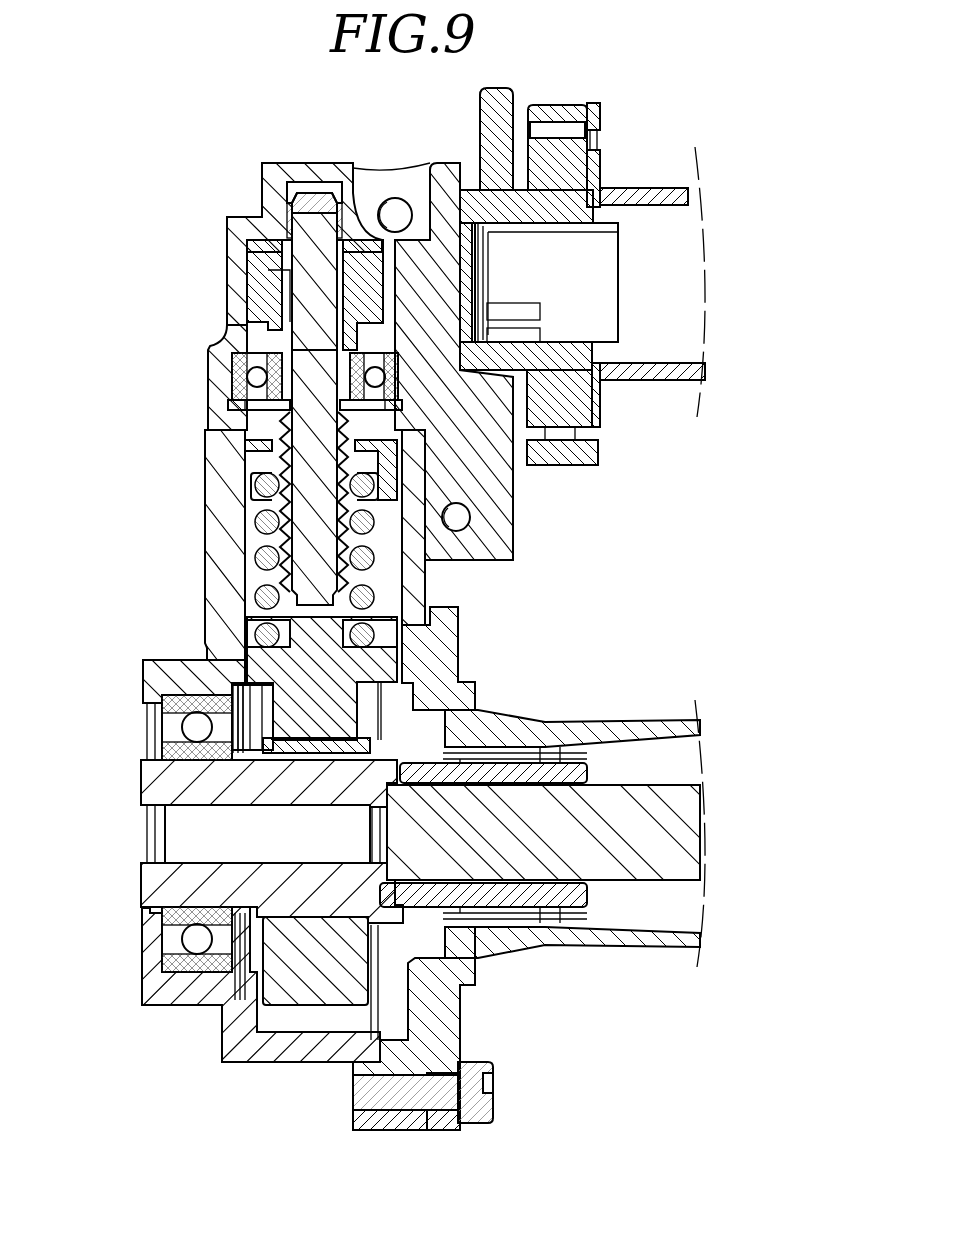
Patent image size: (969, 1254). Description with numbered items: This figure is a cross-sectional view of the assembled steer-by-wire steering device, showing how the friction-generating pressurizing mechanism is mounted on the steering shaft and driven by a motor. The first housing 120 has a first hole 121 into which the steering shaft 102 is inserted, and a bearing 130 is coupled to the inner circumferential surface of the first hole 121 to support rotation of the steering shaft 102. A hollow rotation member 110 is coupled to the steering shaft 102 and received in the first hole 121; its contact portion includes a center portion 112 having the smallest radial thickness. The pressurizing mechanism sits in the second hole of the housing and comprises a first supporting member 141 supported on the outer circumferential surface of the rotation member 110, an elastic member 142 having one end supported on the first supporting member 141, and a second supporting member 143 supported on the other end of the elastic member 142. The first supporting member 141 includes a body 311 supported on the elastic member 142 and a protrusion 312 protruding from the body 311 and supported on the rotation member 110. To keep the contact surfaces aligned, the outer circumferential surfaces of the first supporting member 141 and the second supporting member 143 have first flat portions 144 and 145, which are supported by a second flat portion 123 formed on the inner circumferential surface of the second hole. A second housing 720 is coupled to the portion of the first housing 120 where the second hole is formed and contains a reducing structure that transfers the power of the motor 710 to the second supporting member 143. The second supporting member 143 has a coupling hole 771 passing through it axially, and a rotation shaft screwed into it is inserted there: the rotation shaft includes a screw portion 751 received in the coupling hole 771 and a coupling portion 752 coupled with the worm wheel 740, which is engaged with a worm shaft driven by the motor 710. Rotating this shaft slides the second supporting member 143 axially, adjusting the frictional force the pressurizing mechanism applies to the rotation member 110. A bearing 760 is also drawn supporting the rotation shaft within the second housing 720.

The motor 710 is at (566, 90).
The second housing 720 is at (312, 172).
The worm wheel 740 is at (280, 305).
The coupling portion 752 is at (300, 270).
The screw portion 751 is at (313, 537).
The bearing 760 is at (255, 378).
The coupling hole 771 is at (440, 458).
The elastic member 142 is at (465, 540).
The second supporting member 143 is at (268, 455).
The first flat portion 145 is at (240, 470).
The first flat portion 144 is at (240, 643).
The second flat portion 123 is at (255, 578).
The first supporting member 141 is at (510, 782).
The protrusion 312 is at (320, 667).
The body 311 is at (330, 710).
The center portion 112 is at (273, 782).
The steering shaft 102 is at (160, 886).
The first housing 120 is at (188, 993).
The bearing 130 is at (193, 938).
The rotation member 110 is at (316, 973).
The first hole 121 is at (398, 1000).